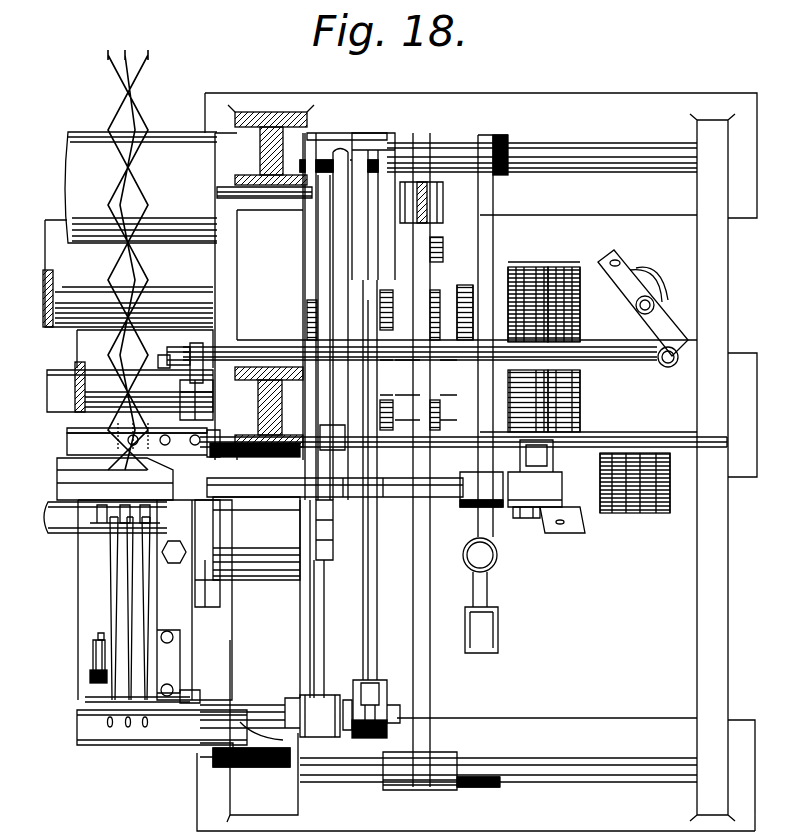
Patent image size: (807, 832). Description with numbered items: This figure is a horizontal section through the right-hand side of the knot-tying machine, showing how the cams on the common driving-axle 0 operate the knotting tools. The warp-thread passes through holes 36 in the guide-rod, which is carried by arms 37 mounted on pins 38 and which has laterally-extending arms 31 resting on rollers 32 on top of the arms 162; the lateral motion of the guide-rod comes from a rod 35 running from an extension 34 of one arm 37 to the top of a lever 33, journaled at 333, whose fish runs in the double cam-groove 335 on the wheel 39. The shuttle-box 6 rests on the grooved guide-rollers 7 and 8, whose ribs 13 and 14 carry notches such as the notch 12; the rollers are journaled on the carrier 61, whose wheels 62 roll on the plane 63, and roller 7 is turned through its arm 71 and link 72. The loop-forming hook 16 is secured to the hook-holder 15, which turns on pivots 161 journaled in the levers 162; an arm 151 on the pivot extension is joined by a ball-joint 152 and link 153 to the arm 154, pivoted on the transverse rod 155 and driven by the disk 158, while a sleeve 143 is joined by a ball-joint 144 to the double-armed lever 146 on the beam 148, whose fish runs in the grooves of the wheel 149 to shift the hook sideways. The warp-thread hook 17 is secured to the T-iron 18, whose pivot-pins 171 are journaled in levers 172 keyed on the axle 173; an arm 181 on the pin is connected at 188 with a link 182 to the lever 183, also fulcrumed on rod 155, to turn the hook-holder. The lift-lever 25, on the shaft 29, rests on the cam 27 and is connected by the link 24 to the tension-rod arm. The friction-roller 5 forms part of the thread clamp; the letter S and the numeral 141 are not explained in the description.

The driving-axle 0 is at (58, 385).
The transverse rod 155 is at (567, 150).
The lever 183 is at (377, 244).
The link 182 is at (372, 602).
The link 24 is at (443, 193).
The lift-lever 25 is at (430, 682).
The cam 27 is at (444, 241).
The disk 158 is at (464, 285).
The arm 154 is at (490, 235).
The arm 151 is at (478, 523).
The ball-joint 152 is at (498, 558).
The link 153 is at (490, 600).
The wheel 149 is at (545, 277).
The gear 141 is at (563, 267).
The lever 33 is at (625, 270).
The journal of lever 33 333 is at (639, 354).
The cam-groove 335 is at (655, 265).
The arms 162 is at (328, 296).
The axle 173 is at (330, 560).
The levers 172 is at (322, 612).
The pivot-pins 171 is at (270, 698).
The connection 188 is at (385, 680).
The arm 181 is at (330, 740).
The plane 63 is at (298, 793).
The shaft 29 is at (85, 700).
The beam 148 is at (688, 452).
The pivots 161 is at (397, 502).
The ball-joint 144 is at (535, 473).
The sleeve 143 is at (522, 518).
The double-armed lever 146 is at (570, 530).
The wheel 39 is at (634, 513).
The extension 34 is at (197, 347).
The rod 35 is at (173, 350).
The pins 38 is at (168, 360).
The arms 37 is at (200, 418).
The rollers 32 is at (333, 437).
The arms 31 is at (248, 457).
The friction-roller 5 is at (67, 440).
The holes 36 is at (103, 452).
The hook-holder 15 is at (57, 478).
The rib 13 is at (102, 505).
The loop-forming hook 16 is at (125, 505).
The carrier 61 is at (182, 618).
The arm 71 is at (182, 538).
The guide-roller 7 is at (108, 540).
The needle S is at (110, 560).
The shuttle-box 6 is at (112, 592).
The rib 14 is at (100, 633).
The guide-roller 8 is at (93, 655).
The notch 12 is at (90, 675).
The link 72 is at (216, 580).
The wheels 62 is at (256, 572).
The T-iron 18 is at (85, 730).
The warp-thread hook 17 is at (125, 728).